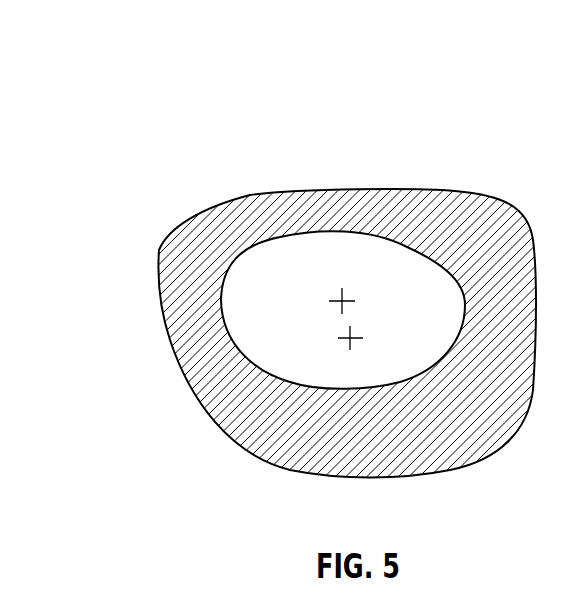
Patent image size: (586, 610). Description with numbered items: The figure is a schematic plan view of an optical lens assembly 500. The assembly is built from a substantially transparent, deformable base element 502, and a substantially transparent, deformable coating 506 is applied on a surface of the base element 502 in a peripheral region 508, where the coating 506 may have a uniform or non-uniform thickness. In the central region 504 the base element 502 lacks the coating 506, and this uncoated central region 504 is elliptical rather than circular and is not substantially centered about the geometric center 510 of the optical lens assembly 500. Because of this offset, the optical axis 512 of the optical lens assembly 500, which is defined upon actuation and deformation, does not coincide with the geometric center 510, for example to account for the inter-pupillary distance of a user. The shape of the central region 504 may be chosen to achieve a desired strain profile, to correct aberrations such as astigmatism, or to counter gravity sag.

The optical lens assembly 500 is at (135, 58).
The base element 502 is at (287, 277).
The central region 504 is at (265, 348).
The coating 506 is at (180, 317).
The peripheral region 508 is at (253, 437).
The geometric center 510 is at (352, 326).
The optical axis 512 is at (344, 287).